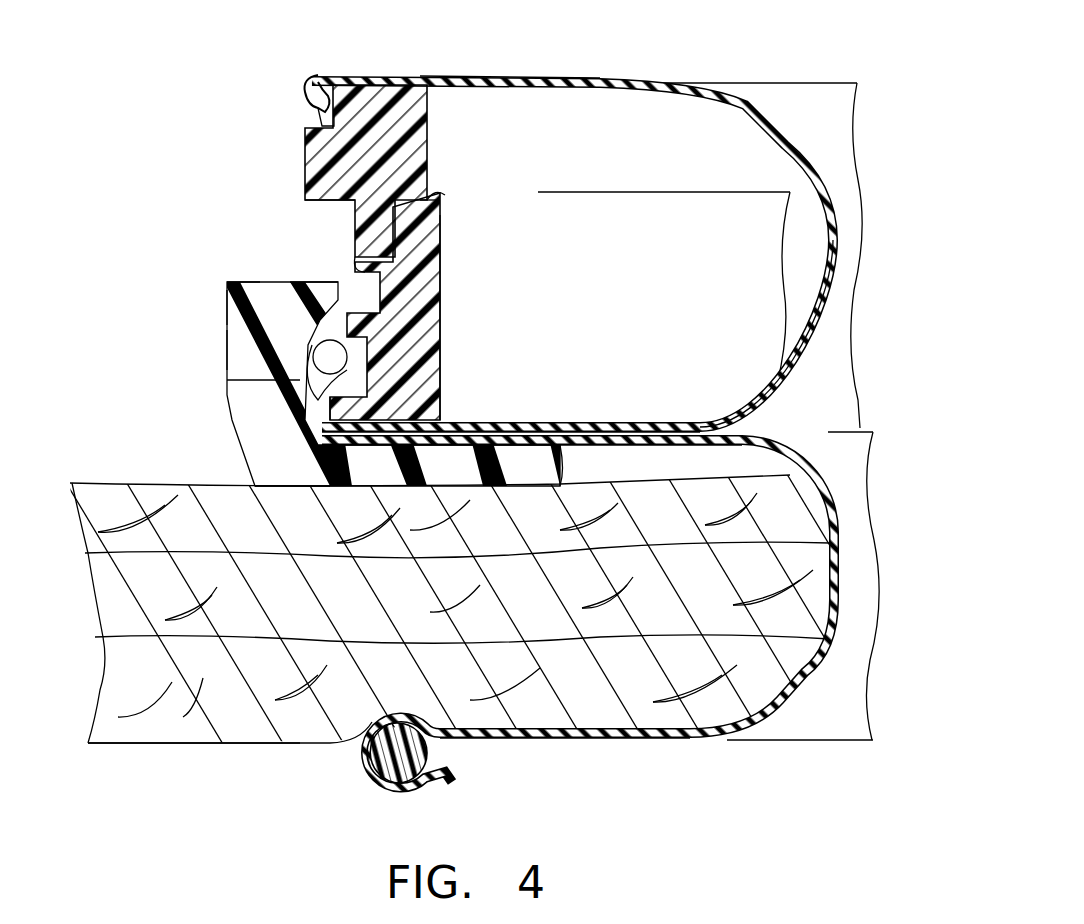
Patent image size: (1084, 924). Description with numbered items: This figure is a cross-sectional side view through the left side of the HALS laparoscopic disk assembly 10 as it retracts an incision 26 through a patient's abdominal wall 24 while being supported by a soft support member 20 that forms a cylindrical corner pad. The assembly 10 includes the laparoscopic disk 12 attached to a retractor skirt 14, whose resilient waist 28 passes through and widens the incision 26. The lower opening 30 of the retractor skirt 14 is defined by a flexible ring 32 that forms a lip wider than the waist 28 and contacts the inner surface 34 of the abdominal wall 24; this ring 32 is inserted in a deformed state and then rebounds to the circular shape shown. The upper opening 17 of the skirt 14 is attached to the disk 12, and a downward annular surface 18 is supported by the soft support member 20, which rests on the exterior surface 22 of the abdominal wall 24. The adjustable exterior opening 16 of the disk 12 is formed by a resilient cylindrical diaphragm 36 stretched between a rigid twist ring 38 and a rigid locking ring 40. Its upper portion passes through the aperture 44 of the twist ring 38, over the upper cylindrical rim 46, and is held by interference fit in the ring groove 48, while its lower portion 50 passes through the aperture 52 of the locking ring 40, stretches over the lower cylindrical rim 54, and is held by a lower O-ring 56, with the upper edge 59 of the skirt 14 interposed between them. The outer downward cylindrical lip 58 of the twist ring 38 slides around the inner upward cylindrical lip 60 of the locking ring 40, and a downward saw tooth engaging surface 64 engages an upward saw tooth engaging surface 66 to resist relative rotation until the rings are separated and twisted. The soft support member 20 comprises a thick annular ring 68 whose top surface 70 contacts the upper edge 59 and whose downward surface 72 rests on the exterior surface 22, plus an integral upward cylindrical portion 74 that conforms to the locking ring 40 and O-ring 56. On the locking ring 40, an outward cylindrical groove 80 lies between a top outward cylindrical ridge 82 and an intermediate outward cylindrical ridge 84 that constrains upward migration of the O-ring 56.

The HALS laparoscopic disk assembly 10 is at (204, 162).
The laparoscopic disk 12 is at (290, 198).
The retractor skirt 14 is at (660, 752).
The adjustable exterior opening 16 is at (886, 108).
The upper opening 17 is at (288, 385).
The downward annular surface 18 is at (588, 434).
The soft support member 20 is at (226, 396).
The exterior surface 22 is at (288, 462).
The abdominal wall 24 is at (112, 462).
The incision 26 is at (800, 495).
The resilient waist 28 is at (838, 650).
The lower opening 30 is at (405, 785).
The flexible ring 32 is at (440, 742).
The inner surface 34 is at (235, 748).
The cylindrical diaphragm 36 is at (490, 78).
The twist ring 38 is at (446, 118).
The locking ring 40 is at (452, 325).
The aperture 44 is at (432, 88).
The upper cylindrical rim 46 is at (312, 78).
The ring groove 48 is at (305, 114).
The lower portion 50 is at (660, 424).
The aperture 52 is at (442, 300).
The lower cylindrical rim 54 is at (358, 408).
The lower O-ring 56 is at (230, 305).
The outer downward cylindrical lip 58 is at (432, 256).
The upper edge 59 is at (302, 300).
The inner upward cylindrical lip 60 is at (432, 236).
The downward saw tooth engaging surface 64 is at (440, 213).
The upward saw tooth engaging surface 66 is at (432, 192).
The thick annular ring 68 is at (505, 445).
The top surface 70 is at (440, 428).
The downward surface 72 is at (560, 480).
The upward cylindrical portion 74 is at (226, 350).
The outward cylindrical groove 80 is at (340, 358).
The top outward cylindrical ridge 82 is at (356, 272).
The intermediate outward cylindrical ridge 84 is at (238, 290).